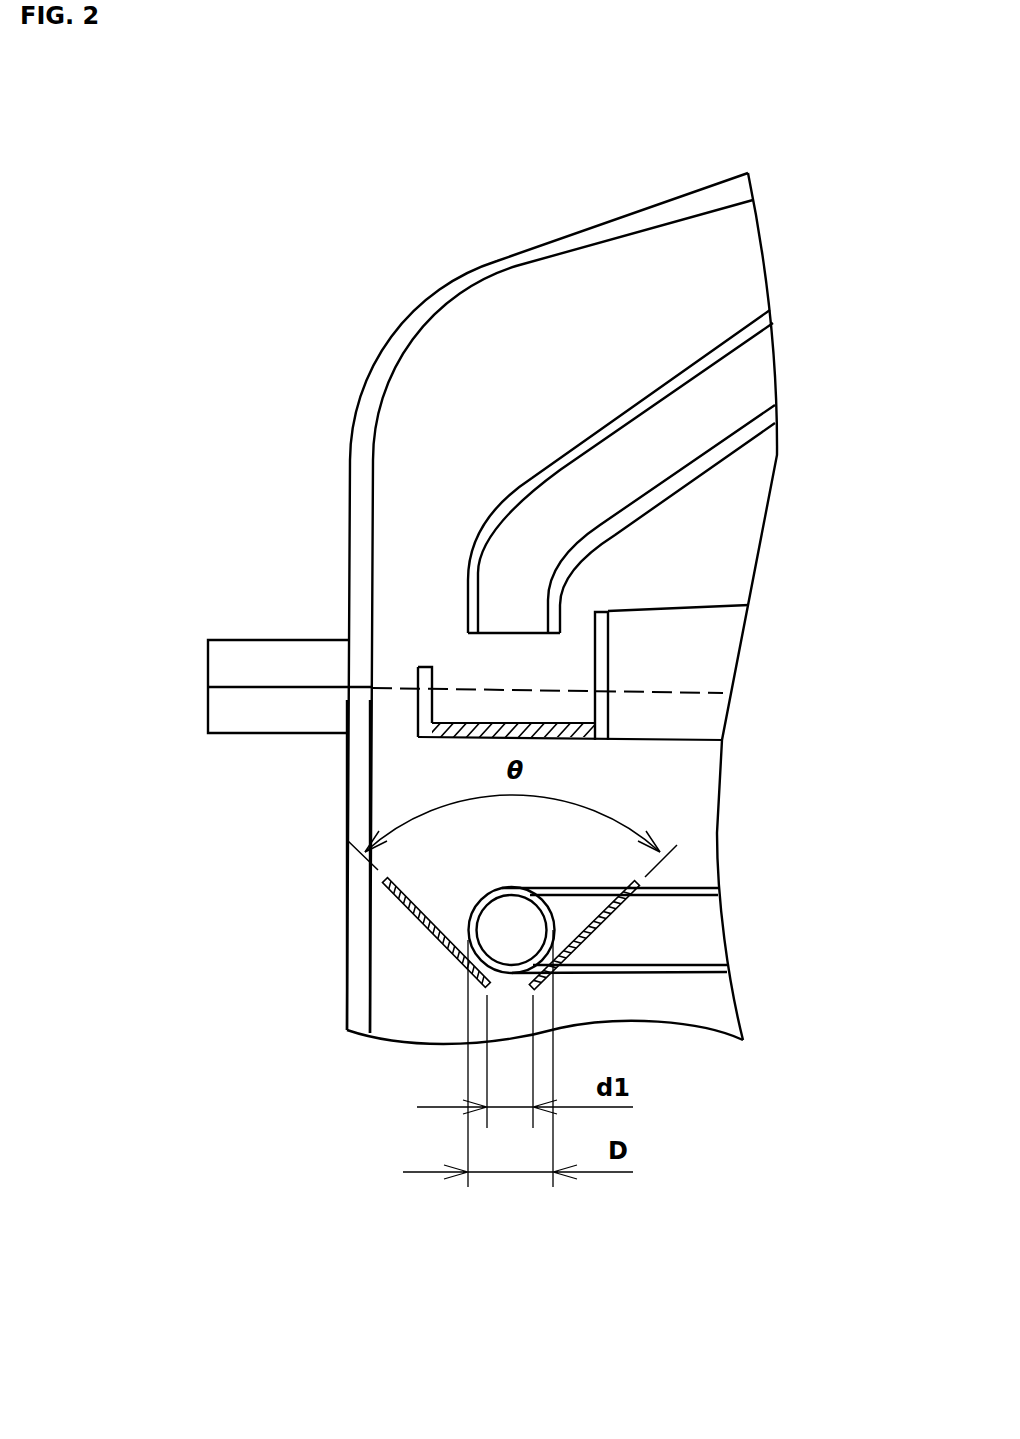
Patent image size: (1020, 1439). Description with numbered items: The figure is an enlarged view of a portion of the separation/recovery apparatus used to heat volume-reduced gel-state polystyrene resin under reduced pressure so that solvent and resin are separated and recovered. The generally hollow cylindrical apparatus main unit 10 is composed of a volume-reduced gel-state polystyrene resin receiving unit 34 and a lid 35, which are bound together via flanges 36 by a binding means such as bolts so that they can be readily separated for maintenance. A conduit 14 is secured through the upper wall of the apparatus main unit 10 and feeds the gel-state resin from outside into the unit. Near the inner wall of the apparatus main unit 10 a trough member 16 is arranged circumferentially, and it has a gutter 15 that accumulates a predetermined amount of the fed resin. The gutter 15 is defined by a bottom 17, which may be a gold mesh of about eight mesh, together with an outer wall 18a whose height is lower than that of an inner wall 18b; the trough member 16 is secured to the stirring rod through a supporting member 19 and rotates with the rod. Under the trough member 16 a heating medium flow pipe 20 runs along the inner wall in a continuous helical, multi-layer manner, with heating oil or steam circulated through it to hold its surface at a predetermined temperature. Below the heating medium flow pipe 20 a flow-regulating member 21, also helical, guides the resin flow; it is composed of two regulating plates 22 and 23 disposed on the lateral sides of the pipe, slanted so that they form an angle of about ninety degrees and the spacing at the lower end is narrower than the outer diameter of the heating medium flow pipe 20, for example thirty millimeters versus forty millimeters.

The apparatus main unit 10 is at (580, 240).
The conduit 14 is at (565, 497).
The gutter 15 is at (460, 673).
The trough member 16 is at (395, 783).
The bottom 17 is at (563, 740).
The outer wall 18a is at (418, 683).
The inner wall 18b is at (597, 648).
The supporting member 19 is at (675, 723).
The heating medium flow pipe 20 is at (677, 887).
The flow-regulating member 21 is at (518, 1128).
The regulating plate 22 is at (432, 937).
The regulating plate 23 is at (607, 927).
The volume-reduced gel-state polystyrene resin receiving unit 34 is at (327, 912).
The lid 35 is at (207, 363).
The flanges 36 is at (197, 678).